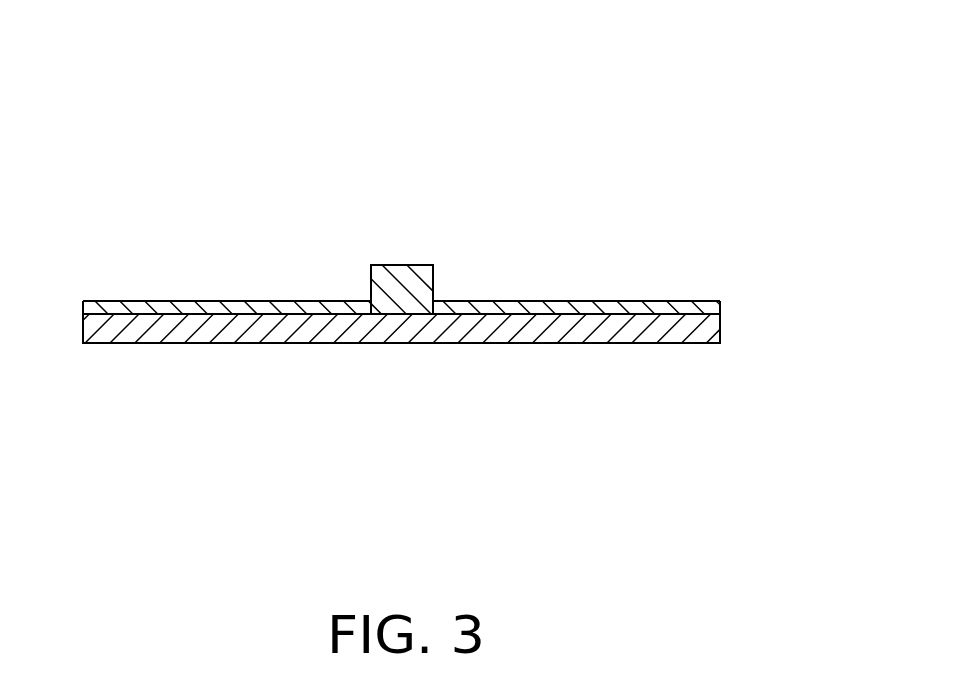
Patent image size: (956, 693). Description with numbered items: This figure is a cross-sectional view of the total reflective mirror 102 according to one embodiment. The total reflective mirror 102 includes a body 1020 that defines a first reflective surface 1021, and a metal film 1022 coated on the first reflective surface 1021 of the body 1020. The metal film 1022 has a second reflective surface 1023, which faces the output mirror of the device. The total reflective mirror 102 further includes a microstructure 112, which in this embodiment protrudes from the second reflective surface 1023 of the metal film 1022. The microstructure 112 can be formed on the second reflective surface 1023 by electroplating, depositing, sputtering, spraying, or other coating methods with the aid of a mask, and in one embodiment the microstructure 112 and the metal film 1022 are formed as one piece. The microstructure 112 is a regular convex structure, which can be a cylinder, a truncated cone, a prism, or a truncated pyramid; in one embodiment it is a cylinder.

The total reflective mirror 102 is at (438, 258).
The microstructure 112 is at (406, 277).
The body 1020 is at (698, 335).
The first reflective surface 1021 is at (617, 314).
The metal film 1022 is at (715, 304).
The second reflective surface 1023 is at (682, 302).